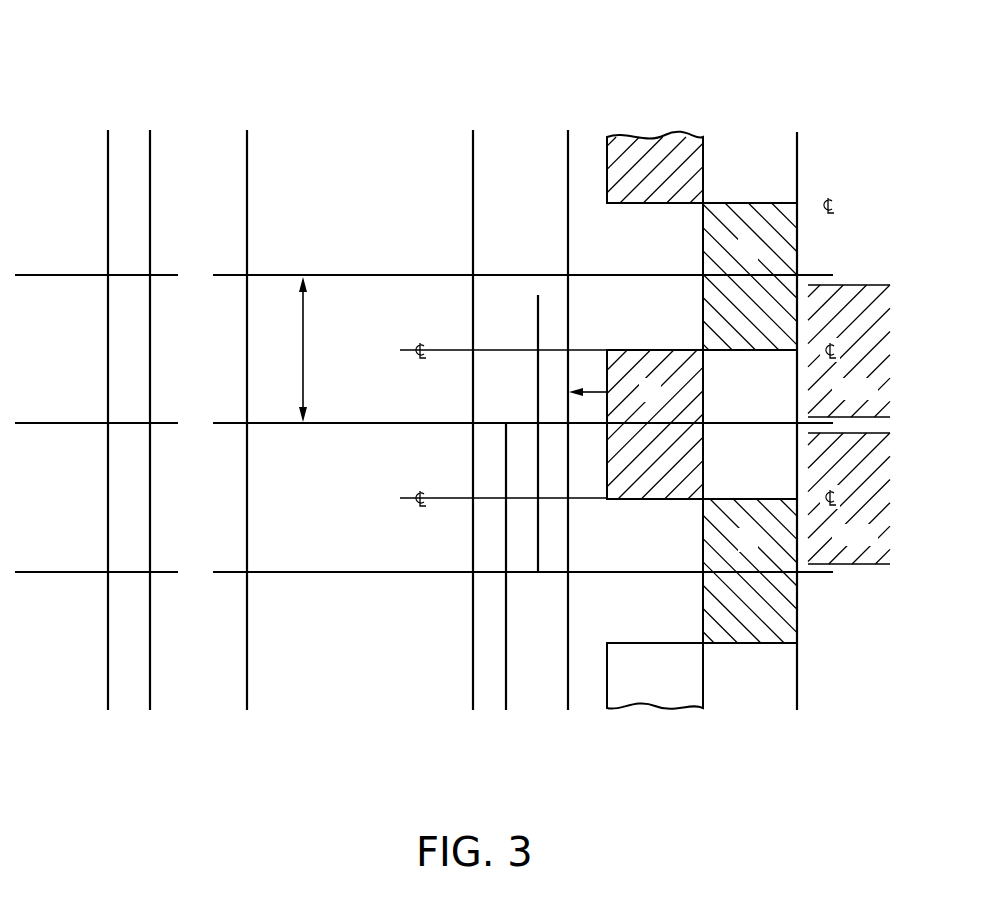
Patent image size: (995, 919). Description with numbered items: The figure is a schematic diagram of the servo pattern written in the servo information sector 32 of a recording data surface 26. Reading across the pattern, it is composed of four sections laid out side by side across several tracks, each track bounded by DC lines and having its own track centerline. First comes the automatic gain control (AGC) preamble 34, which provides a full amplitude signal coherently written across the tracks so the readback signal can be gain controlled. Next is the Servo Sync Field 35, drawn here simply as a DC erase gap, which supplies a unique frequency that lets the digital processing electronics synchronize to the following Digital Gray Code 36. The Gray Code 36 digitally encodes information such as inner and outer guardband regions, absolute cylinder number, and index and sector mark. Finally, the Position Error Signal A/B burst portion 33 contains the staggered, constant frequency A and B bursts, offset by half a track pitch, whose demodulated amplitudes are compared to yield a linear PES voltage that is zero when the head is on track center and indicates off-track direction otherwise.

The recording data surface 26 is at (233, 43).
The servo information sector 32 is at (110, 720).
The Position Error Signal (PES) A/B burst portion 33 is at (608, 118).
The automatic gain control (AGC) preamble 34 is at (128, 114).
The Servo Sync Field 35 is at (200, 114).
The Digital Gray Code 36 is at (247, 117).